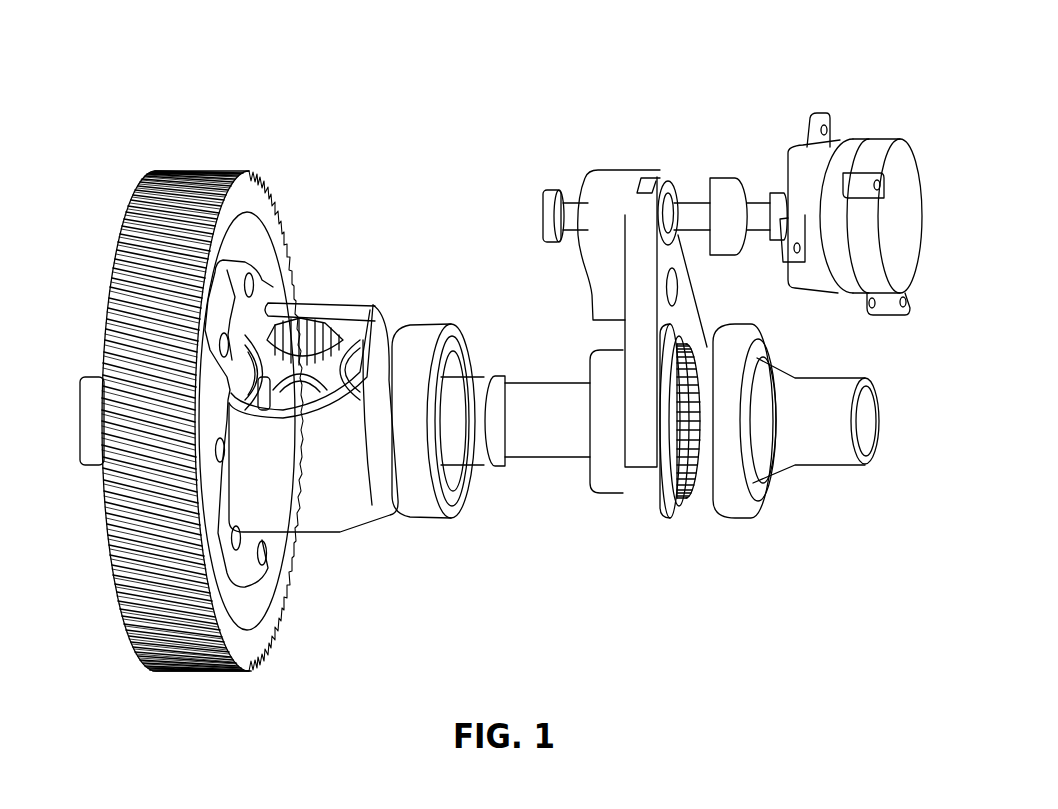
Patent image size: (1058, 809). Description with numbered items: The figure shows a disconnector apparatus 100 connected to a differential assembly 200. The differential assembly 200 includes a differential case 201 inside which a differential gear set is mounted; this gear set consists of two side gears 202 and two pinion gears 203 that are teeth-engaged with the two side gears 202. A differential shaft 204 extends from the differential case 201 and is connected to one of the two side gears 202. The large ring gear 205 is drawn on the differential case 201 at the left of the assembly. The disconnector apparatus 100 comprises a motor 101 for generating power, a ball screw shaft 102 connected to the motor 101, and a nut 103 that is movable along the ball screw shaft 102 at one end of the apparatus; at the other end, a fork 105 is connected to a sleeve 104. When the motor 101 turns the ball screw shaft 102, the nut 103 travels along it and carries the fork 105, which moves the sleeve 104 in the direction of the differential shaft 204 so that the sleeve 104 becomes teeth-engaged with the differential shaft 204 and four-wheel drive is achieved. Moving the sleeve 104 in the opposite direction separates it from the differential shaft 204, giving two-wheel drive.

The disconnector apparatus 100 is at (704, 130).
The motor 101 is at (868, 152).
The ball screw shaft 102 is at (756, 206).
The nut 103 is at (670, 240).
The sleeve 104 is at (662, 510).
The fork 105 is at (637, 447).
The differential assembly 200 is at (308, 173).
The differential case 201 is at (363, 517).
The side gears 202 is at (252, 362).
The pinion gears 203 is at (308, 335).
The differential shaft 204 is at (530, 390).
The ring gear 205 is at (177, 177).